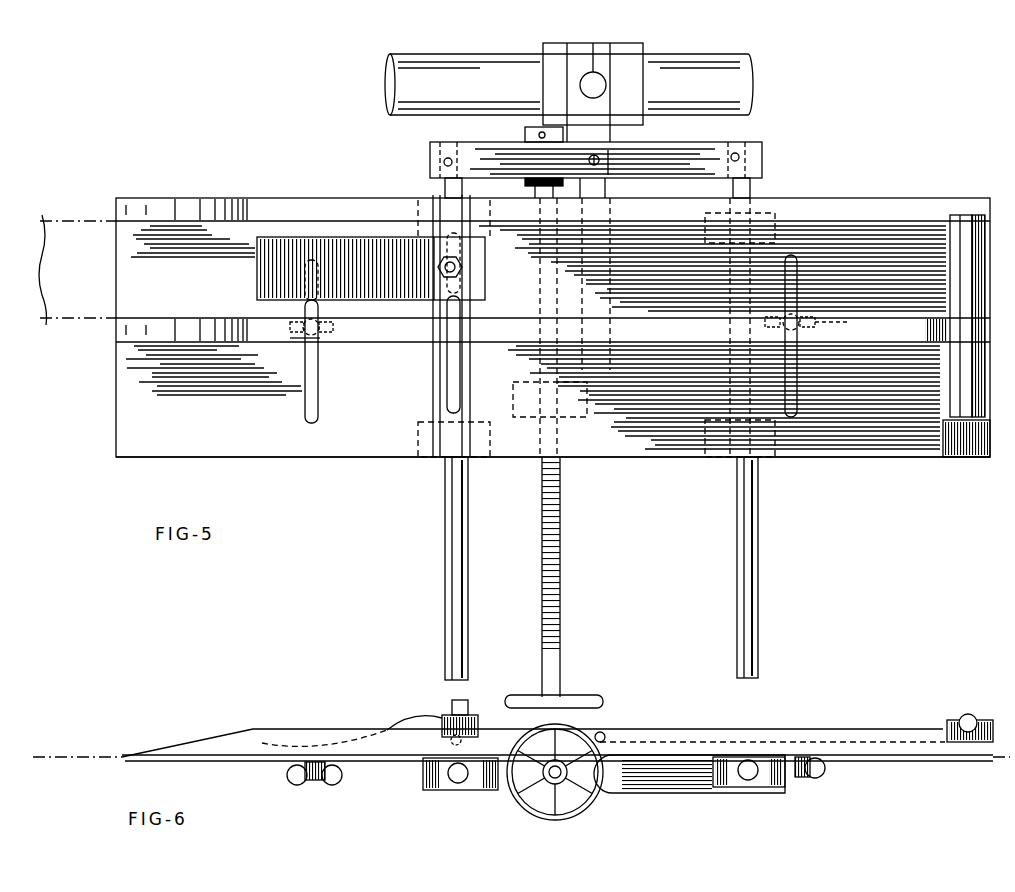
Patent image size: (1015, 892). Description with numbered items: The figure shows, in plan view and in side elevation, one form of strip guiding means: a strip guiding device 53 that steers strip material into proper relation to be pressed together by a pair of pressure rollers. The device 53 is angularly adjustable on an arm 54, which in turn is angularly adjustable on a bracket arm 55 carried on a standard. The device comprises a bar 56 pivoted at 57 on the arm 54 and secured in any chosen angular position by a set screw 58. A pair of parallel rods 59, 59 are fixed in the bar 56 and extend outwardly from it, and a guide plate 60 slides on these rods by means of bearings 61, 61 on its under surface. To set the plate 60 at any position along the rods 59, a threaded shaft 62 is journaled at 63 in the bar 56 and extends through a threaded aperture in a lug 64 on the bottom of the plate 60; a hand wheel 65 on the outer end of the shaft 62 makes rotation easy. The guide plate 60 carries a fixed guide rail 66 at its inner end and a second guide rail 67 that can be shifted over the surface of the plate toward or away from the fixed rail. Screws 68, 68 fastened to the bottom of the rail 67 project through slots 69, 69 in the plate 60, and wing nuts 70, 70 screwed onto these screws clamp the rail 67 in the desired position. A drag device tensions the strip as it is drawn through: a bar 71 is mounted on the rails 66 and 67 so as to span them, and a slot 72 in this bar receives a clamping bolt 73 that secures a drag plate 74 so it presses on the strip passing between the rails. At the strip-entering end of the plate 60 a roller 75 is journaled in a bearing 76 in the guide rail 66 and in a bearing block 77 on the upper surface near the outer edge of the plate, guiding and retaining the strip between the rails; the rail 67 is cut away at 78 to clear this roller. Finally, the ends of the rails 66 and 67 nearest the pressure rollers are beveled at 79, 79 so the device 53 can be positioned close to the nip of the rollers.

In FIG. 5, the strip guiding device 53 is at (575, 449).
In FIG. 5, the arm 54 is at (630, 134).
In FIG. 6, the arm 54 is at (620, 746).
In FIG. 5, the bracket arm 55 is at (728, 78).
In FIG. 5, the bar 56 is at (700, 150).
In FIG. 6, the bar 56 is at (680, 792).
In FIG. 5, the pivot 57 is at (608, 162).
In FIG. 6, the pivot 57 is at (640, 758).
In FIG. 5, the set screw 58 is at (598, 165).
In FIG. 6, the set screw 58 is at (603, 733).
In FIG. 5, the parallel rods 59 is at (468, 511).
In FIG. 6, the parallel rods 59 is at (460, 783).
In FIG. 5, the guide plate 60 is at (900, 435).
In FIG. 6, the guide plate 60 is at (410, 758).
In FIG. 5, the bearings 61 is at (418, 214).
In FIG. 6, the bearings 61 is at (432, 791).
In FIG. 5, the threaded shaft 62 is at (562, 510).
In FIG. 6, the threaded shaft 62 is at (598, 796).
In FIG. 5, the journal 63 is at (537, 170).
In FIG. 5, the lug 64 is at (590, 405).
In FIG. 6, the lug 64 is at (546, 786).
In FIG. 5, the hand wheel 65 is at (525, 693).
In FIG. 6, the hand wheel 65 is at (565, 818).
In FIG. 5, the fixed guide rail 66 is at (290, 215).
In FIG. 5, the adjustable guide rail 67 is at (272, 346).
In FIG. 5, the screws 68 is at (316, 320).
In FIG. 6, the screws 68 is at (312, 782).
In FIG. 5, the slots 69 is at (320, 347).
In FIG. 5, the wing nuts 70 is at (290, 327).
In FIG. 6, the wing nuts 70 is at (336, 781).
In FIG. 5, the bar 71 is at (470, 375).
In FIG. 6, the bar 71 is at (478, 722).
In FIG. 5, the slot 72 is at (475, 305).
In FIG. 5, the clamping bolt 73 is at (465, 268).
In FIG. 6, the clamping bolt 73 is at (468, 703).
In FIG. 5, the drag plate 74 is at (336, 262).
In FIG. 6, the drag plate 74 is at (350, 745).
In FIG. 5, the roller 75 is at (955, 228).
In FIG. 5, the bearing 76 is at (965, 213).
In FIG. 5, the bearing block 77 is at (962, 433).
In FIG. 6, the bearing block 77 is at (975, 718).
In FIG. 5, the cut-away 78 is at (934, 334).
In FIG. 6, the cut-away 78 is at (955, 742).
In FIG. 5, the beveled ends 79 is at (156, 213).
In FIG. 6, the beveled ends 79 is at (190, 750).